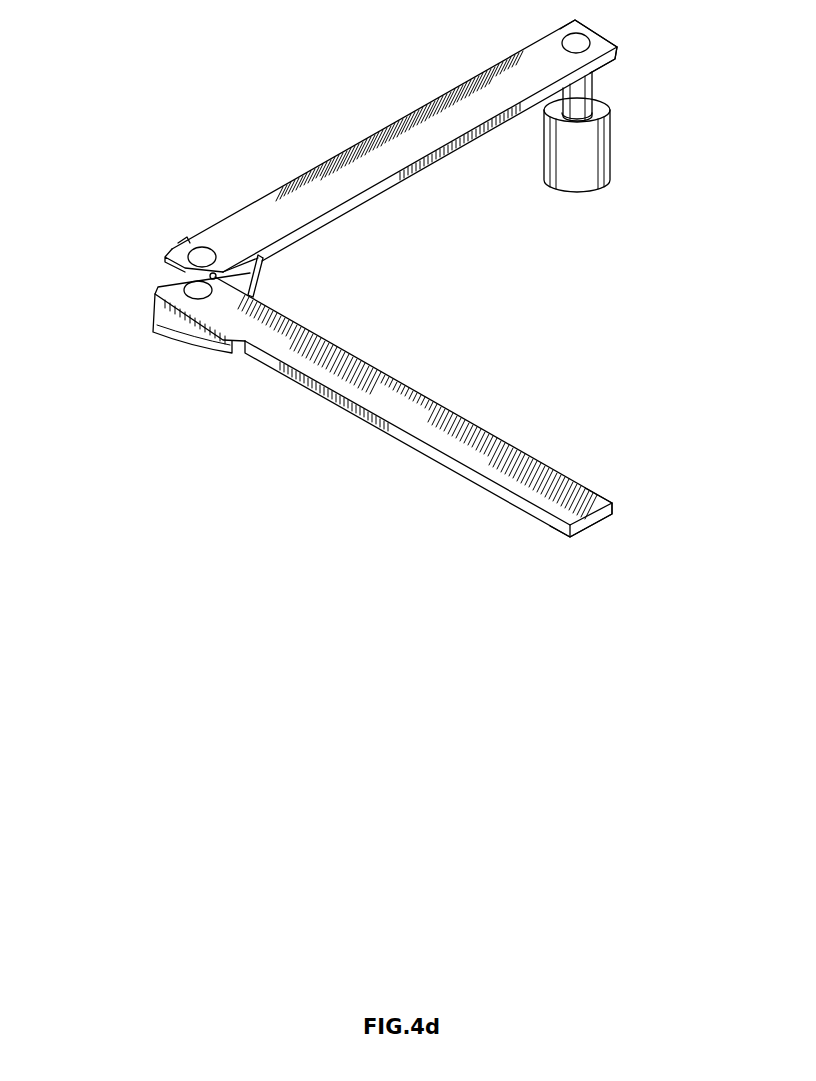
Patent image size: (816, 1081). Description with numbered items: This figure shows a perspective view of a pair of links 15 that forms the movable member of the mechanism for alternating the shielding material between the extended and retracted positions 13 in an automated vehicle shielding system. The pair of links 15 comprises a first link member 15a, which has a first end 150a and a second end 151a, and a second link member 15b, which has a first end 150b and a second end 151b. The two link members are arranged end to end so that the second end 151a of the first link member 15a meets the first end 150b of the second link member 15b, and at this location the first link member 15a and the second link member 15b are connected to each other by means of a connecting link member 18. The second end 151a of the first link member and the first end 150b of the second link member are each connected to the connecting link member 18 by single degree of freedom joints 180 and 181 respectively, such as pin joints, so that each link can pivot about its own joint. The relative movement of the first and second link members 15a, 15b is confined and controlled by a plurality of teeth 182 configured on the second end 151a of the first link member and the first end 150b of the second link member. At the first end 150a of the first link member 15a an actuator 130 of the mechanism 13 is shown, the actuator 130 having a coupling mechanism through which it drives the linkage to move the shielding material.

The pair of links 15 is at (393, 200).
The first link member 15a is at (363, 140).
The second link member 15b is at (298, 378).
The first end of the first link member 150a is at (597, 32).
The second end of the first link member 151a is at (172, 257).
The first end of the second link member 150b is at (168, 275).
The second end of the second link member 151b is at (590, 522).
The single degree of freedom joint 180 is at (202, 250).
The single degree of freedom joint 181 is at (175, 295).
The teeth 182 is at (216, 277).
The connecting link member 18 is at (157, 340).
The actuator 130 is at (593, 147).
The mechanism for alternating the shielding material between the extended and retrac 13 is at (527, 287).